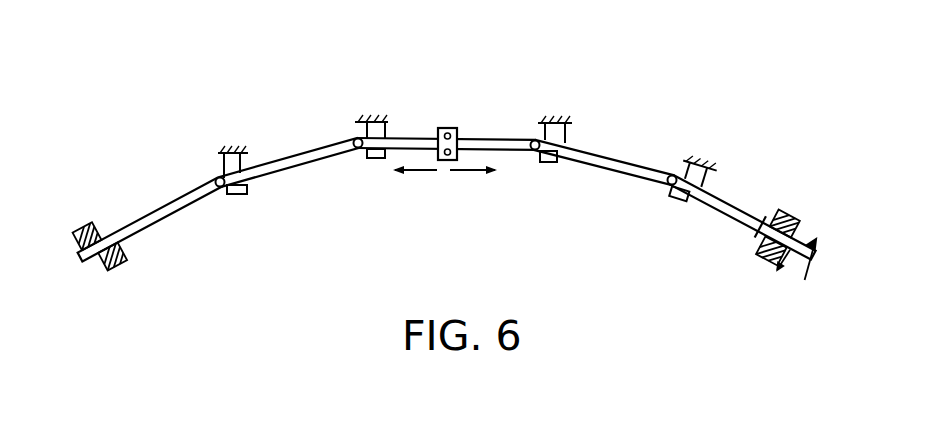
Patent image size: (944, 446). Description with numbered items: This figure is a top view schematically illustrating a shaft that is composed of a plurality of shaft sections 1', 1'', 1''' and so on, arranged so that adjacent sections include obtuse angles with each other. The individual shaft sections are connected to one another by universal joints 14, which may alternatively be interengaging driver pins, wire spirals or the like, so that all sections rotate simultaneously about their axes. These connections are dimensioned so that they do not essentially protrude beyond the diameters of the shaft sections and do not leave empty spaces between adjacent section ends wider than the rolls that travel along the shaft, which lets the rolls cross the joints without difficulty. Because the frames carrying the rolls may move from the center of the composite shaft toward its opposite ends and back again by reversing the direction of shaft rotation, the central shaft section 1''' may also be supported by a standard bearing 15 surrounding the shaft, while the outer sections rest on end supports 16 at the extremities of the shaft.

The shaft section 1' is at (150, 201).
The shaft section 1'' is at (289, 140).
The central shaft section 1''' is at (446, 119).
The universal joint 14 is at (220, 195).
The standard bearing 15 is at (460, 130).
The end bearing support 16 is at (86, 226).